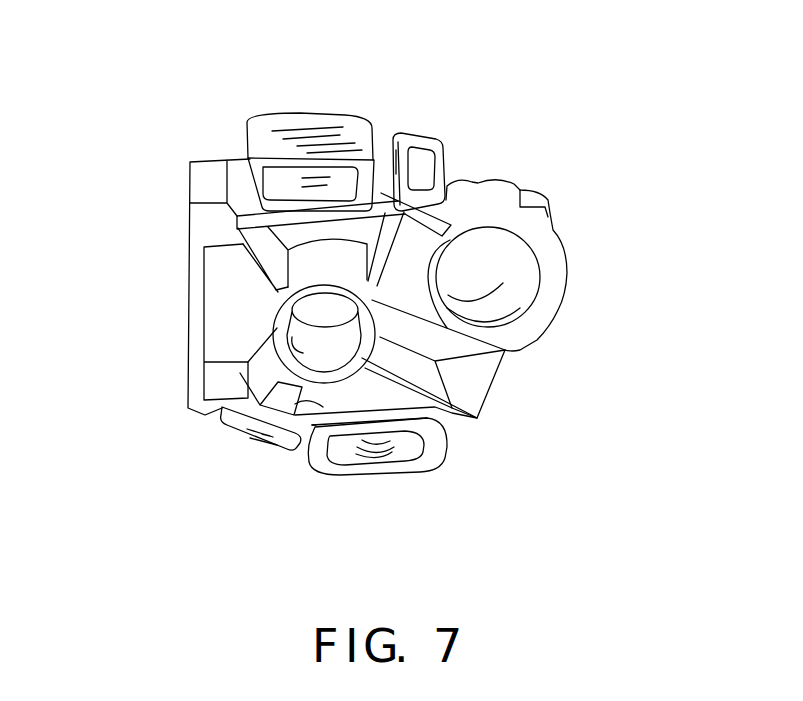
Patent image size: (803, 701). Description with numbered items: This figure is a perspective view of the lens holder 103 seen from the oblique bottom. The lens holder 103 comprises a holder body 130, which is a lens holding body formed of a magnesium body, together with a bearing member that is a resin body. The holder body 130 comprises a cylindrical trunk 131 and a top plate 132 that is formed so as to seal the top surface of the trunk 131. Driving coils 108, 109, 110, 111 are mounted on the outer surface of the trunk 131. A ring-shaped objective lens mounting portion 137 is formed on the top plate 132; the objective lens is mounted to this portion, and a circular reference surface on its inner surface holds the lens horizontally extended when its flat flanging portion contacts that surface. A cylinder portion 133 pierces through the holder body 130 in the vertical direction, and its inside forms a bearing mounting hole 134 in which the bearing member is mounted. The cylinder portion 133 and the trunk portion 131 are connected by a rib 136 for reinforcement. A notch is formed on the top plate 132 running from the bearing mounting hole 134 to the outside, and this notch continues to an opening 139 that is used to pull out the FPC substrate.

The lens holder 103 is at (558, 168).
The driving coil 108 is at (262, 457).
The driving coil 109 is at (410, 133).
The driving coil 110 is at (387, 469).
The driving coil 111 is at (283, 118).
The holder body 130 is at (190, 270).
The cylindrical trunk 131 is at (237, 432).
The top plate 132 is at (505, 350).
The cylinder portion 133 is at (278, 300).
The bearing mounting hole 134 is at (277, 368).
The rib 136 is at (417, 363).
The objective lens mounting portion 137 is at (558, 257).
The opening 139 is at (185, 302).